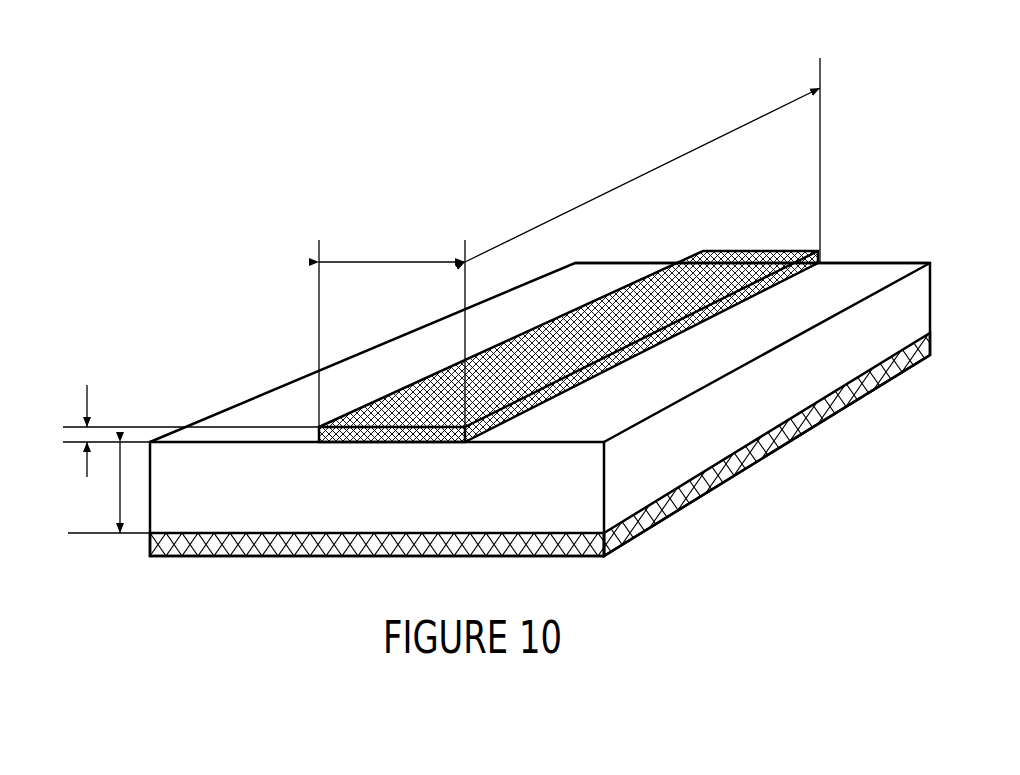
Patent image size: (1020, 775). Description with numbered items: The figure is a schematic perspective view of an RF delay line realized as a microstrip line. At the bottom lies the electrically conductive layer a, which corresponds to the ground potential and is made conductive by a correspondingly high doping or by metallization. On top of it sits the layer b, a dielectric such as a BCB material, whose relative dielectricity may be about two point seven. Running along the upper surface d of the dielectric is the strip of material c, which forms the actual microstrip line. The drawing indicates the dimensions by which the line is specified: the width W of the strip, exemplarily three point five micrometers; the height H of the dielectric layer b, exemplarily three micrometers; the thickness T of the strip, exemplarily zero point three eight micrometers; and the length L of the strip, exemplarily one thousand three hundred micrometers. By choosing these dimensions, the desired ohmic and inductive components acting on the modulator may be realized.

The electrically conductive layer a is at (798, 437).
The dielectric layer b is at (905, 263).
The microstrip line material c is at (820, 262).
The top surface of substrate d is at (747, 198).
The width W is at (392, 335).
The length L is at (642, 160).
The thickness T is at (185, 431).
The height H is at (109, 487).